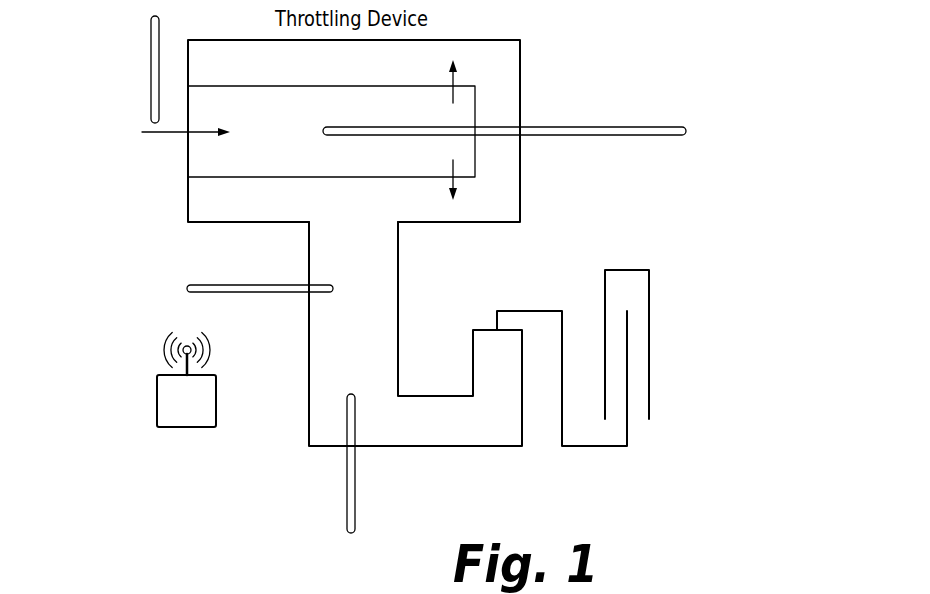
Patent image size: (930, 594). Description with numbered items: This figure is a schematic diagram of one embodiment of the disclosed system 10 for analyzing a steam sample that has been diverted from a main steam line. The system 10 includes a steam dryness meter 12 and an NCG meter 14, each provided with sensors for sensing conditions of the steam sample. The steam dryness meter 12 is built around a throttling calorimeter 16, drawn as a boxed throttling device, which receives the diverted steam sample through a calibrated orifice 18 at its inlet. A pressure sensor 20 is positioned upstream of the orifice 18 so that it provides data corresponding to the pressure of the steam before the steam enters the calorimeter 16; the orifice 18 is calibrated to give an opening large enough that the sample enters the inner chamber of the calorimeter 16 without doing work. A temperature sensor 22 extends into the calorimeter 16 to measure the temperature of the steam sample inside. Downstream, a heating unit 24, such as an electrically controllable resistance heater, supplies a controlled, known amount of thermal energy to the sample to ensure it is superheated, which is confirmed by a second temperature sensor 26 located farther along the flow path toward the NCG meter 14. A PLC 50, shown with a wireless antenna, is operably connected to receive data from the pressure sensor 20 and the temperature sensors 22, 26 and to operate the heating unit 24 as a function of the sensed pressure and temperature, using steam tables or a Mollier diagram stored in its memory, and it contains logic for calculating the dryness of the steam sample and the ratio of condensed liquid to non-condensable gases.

The system 10 is at (285, 465).
The steam dryness meter 12 is at (183, 179).
The NCG meter 14 is at (595, 446).
The throttling calorimeter 16 is at (273, 86).
The calibrated orifice 18 is at (170, 133).
The pressure sensor 20 is at (151, 68).
The temperature sensor 22 is at (588, 126).
The heating unit 24 is at (262, 285).
The second temperature sensor 26 is at (355, 462).
The PLC 50 is at (157, 401).